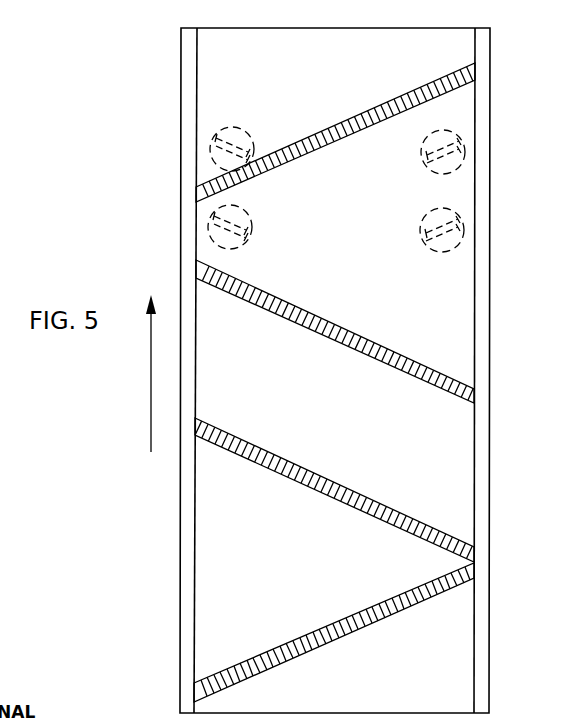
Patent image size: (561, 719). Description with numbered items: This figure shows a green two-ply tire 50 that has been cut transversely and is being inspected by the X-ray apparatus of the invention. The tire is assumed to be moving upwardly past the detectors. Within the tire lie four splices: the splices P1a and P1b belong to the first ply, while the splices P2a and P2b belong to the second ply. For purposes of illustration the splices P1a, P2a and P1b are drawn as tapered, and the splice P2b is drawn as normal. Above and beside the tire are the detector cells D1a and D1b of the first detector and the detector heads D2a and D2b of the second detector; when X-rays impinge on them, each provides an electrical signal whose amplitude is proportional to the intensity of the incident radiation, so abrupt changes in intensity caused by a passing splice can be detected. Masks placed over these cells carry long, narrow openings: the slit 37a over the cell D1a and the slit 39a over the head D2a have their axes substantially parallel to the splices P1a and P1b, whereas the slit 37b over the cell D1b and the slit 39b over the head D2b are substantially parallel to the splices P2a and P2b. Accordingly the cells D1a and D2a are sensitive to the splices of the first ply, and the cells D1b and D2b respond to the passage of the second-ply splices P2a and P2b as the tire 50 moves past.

The green two-ply tire 50 is at (492, 337).
The splice P1a is at (362, 114).
The splice P1b is at (340, 619).
The splice P2a is at (313, 313).
The splice P2b is at (306, 466).
The opening 37a is at (460, 218).
The opening 37b is at (461, 165).
The opening 39a is at (209, 225).
The opening 39b is at (212, 159).
The detector cell D1a is at (459, 243).
The detector cell D1b is at (461, 140).
The detector head D2a is at (212, 239).
The detector head D2b is at (213, 137).